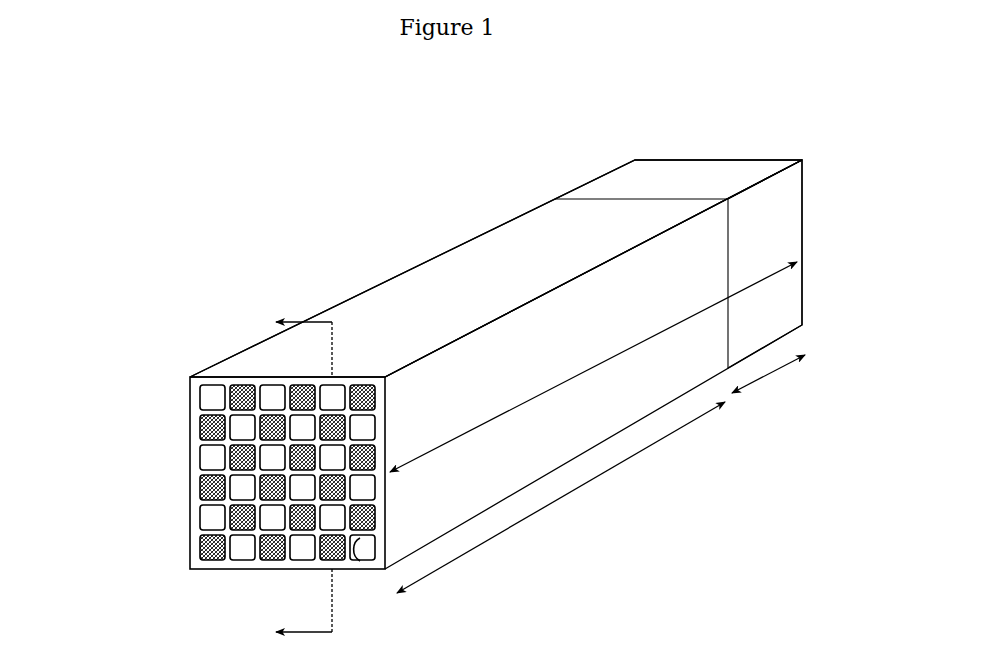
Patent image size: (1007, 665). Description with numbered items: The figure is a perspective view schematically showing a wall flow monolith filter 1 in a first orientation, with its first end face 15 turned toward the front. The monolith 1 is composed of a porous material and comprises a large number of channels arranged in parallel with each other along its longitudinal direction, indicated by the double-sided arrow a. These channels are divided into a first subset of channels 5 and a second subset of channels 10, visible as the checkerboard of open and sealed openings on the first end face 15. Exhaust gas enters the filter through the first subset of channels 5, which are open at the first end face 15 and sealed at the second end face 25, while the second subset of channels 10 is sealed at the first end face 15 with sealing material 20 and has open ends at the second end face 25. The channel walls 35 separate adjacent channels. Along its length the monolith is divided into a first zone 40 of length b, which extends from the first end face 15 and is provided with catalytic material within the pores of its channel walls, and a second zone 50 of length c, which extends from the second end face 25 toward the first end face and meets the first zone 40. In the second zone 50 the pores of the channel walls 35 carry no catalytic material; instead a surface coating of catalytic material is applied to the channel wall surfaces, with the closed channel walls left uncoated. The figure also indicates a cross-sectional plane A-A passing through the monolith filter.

The wall flow monolith filter 1 is at (444, 347).
The first subset of channels 5 is at (243, 559).
The second subset of channels 10 is at (214, 490).
The first end face 15 is at (196, 413).
The sealing material 20 is at (208, 548).
The second end face 25 is at (718, 158).
The channel walls 35 is at (364, 556).
The first zone 40 is at (496, 259).
The second zone 50 is at (624, 190).